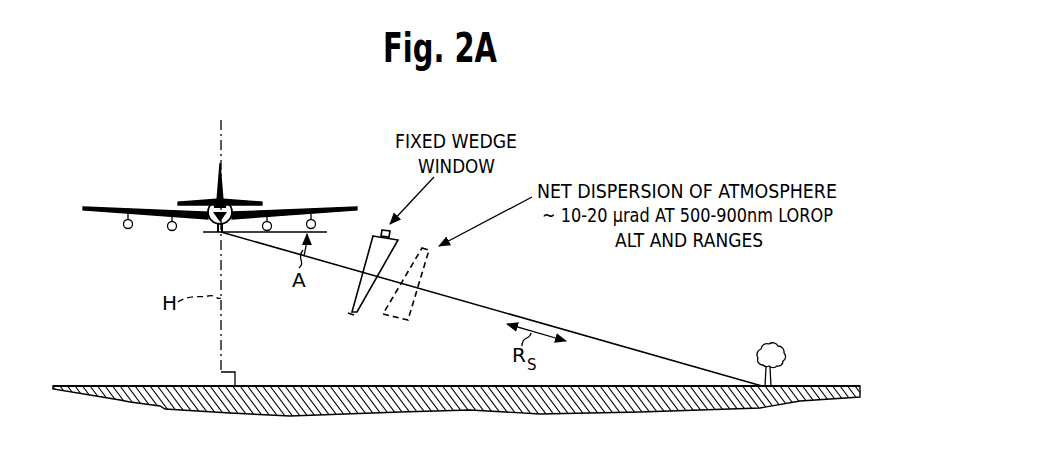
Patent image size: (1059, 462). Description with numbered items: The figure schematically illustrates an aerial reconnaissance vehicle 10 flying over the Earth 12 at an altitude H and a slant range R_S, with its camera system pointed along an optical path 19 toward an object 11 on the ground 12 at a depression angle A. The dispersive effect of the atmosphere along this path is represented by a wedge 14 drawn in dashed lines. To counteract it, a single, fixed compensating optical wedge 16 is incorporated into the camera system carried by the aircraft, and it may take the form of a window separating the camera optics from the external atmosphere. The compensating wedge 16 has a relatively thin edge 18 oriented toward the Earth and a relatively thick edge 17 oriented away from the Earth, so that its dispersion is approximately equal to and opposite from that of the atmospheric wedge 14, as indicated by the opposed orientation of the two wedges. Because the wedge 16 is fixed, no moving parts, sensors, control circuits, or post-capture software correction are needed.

The aerial reconnaissance vehicle 10 is at (228, 198).
The object on the ground 11 is at (781, 346).
The Earth 12 is at (803, 386).
The wedge representing net atmospheric dispersion 14 is at (432, 255).
The fixed compensating optical wedge 16 is at (392, 235).
The relatively thick edge 17 is at (380, 232).
The relatively thin edge 18 is at (351, 311).
The optical path 19 is at (502, 311).